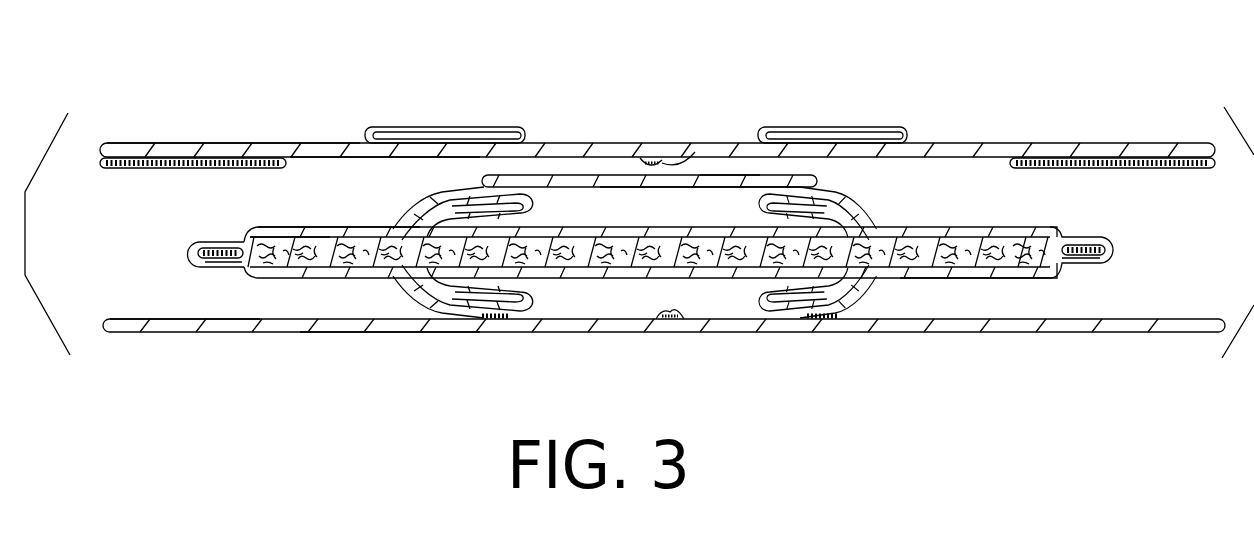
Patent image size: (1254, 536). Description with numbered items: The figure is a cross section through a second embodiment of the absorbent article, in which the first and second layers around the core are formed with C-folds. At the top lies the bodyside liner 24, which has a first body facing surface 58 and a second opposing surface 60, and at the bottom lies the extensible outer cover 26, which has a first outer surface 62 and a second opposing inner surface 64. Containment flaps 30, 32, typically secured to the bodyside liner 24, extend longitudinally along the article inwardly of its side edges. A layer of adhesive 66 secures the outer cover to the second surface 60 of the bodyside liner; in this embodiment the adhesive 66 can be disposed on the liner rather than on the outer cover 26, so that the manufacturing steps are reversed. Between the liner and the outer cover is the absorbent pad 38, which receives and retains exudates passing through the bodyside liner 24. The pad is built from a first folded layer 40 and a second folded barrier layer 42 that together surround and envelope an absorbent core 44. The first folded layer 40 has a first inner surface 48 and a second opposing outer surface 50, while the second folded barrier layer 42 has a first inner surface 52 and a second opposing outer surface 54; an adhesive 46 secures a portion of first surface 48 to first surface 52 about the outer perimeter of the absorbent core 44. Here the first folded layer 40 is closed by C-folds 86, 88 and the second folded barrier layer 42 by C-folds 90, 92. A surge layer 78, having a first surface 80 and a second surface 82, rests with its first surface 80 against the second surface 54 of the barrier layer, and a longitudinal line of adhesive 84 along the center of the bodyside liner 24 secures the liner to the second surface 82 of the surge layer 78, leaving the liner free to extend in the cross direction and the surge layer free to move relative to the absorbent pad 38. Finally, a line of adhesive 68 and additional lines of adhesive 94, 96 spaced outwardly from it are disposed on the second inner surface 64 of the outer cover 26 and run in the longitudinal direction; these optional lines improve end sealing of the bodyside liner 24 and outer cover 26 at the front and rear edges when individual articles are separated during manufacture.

The bodyside liner 24 is at (961, 136).
The outer cover 26 is at (1104, 338).
The containment flap 30 is at (848, 127).
The containment flap 32 is at (425, 127).
The absorbent pad 38 is at (652, 250).
The first folded layer 40 is at (229, 278).
The second folded barrier layer 42 is at (349, 226).
The absorbent core 44 is at (1043, 228).
The adhesive 46 is at (196, 253).
The first inner surface 48 is at (950, 262).
The second opposing outer surface 50 is at (1027, 279).
The first inner surface 52 is at (331, 237).
The second opposing outer surface 54 is at (246, 242).
The first body facing surface 58 is at (313, 142).
The second opposing surface 60 is at (353, 158).
The first outer surface 62 is at (395, 332).
The second opposing inner surface 64 is at (293, 318).
The layer of adhesive 66 is at (158, 170).
The line of adhesive 68 is at (682, 321).
The surge layer 78 is at (557, 173).
The first surface 80 is at (672, 187).
The second surface 82 is at (715, 183).
The line of adhesive 84 is at (695, 150).
The C-fold 86 is at (750, 306).
The C-fold 88 is at (538, 304).
The C-fold 90 is at (868, 201).
The C-fold 92 is at (538, 203).
The additional line of adhesive 94 is at (498, 332).
The additional line of adhesive 96 is at (830, 320).